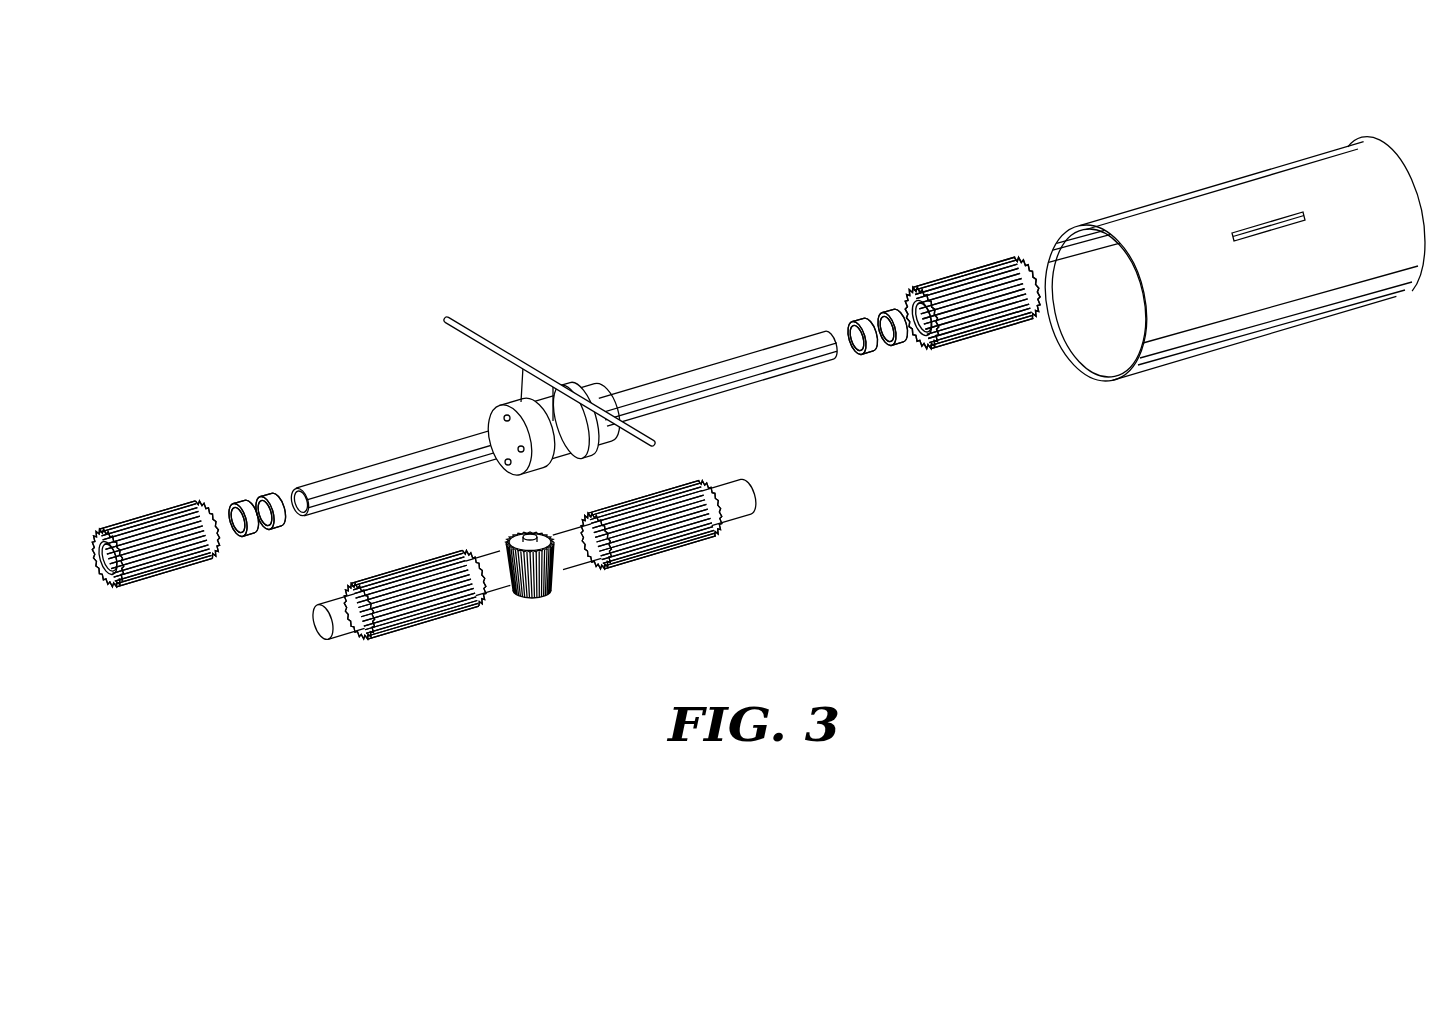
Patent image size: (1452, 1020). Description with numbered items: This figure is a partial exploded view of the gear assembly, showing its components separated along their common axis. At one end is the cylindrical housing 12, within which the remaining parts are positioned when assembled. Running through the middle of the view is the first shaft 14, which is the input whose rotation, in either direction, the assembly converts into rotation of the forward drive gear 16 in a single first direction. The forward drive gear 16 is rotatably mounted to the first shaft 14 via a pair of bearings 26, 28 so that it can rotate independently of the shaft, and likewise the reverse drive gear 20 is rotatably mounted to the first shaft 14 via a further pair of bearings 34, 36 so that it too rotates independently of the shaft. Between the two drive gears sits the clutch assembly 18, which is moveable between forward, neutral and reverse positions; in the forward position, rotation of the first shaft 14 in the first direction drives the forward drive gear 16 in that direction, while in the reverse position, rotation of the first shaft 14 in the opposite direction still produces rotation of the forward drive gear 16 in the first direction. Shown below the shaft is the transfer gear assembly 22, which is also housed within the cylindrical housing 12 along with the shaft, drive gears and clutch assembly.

The cylindrical housing 12 is at (1185, 188).
The first shaft 14 is at (708, 372).
The forward drive gear 16 is at (957, 282).
The clutch assembly 18 is at (565, 357).
The reverse drive gear 20 is at (147, 506).
The transfer gear assembly 22 is at (520, 604).
The bearing 26 is at (851, 320).
The bearing 28 is at (882, 314).
The bearing 34 is at (238, 500).
The bearing 36 is at (264, 497).